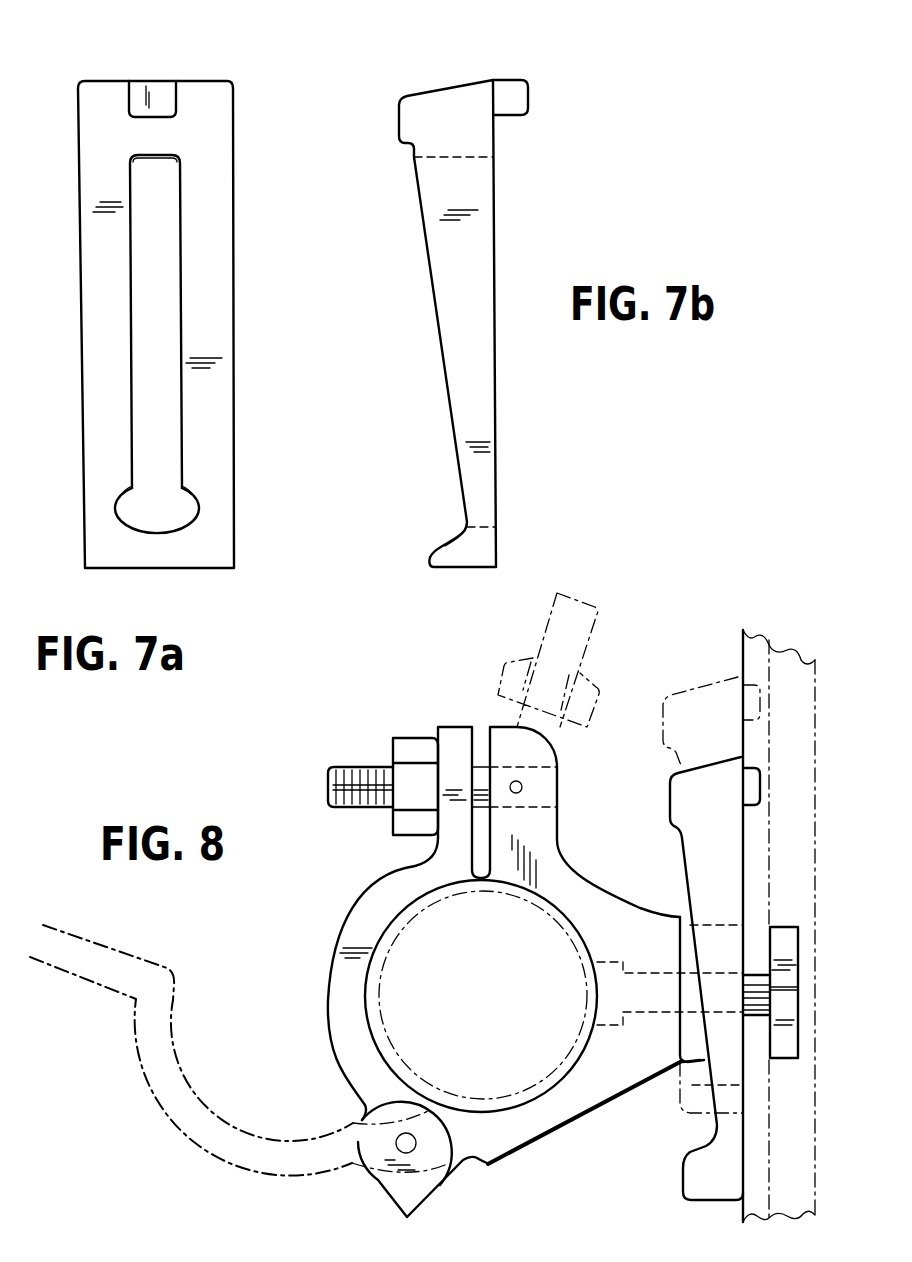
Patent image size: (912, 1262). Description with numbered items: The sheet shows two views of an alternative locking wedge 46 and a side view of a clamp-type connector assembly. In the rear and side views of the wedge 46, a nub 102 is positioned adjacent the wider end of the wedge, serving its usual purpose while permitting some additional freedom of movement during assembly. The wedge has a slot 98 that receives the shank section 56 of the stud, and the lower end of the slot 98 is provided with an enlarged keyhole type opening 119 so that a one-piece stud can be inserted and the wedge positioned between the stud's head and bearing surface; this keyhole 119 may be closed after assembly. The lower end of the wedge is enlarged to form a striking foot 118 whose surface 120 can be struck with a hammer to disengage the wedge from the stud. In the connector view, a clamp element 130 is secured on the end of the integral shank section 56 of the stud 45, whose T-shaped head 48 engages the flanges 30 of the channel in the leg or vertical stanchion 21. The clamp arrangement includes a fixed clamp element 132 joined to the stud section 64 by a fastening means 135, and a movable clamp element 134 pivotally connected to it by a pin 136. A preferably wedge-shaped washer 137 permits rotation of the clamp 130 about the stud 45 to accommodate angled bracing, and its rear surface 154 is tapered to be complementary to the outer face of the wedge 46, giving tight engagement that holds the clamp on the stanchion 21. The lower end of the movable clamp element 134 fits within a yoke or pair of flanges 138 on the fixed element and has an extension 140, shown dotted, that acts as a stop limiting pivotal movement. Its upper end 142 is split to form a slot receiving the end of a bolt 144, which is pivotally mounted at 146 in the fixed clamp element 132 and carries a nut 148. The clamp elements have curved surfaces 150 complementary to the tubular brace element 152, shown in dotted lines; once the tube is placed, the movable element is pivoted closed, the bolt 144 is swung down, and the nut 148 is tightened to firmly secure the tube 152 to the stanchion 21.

In FIG. 7a, the nub 102 is at (157, 92).
In FIG. 7b, the nub 102 is at (518, 112).
In FIG. 7a, the locking wedge 46 is at (212, 222).
In FIG. 7b, the locking wedge 46 is at (483, 272).
In FIG. 8, the locking wedge 46 is at (700, 783).
In FIG. 7a, the wedge slot 98 is at (165, 350).
In FIG. 7a, the keyhole type opening 119 is at (195, 496).
In FIG. 7b, the striking foot 118 is at (452, 562).
In FIG. 7b, the surface 120 is at (482, 572).
In FIG. 8, the flanges 30 is at (757, 624).
In FIG. 8, the leg 21 is at (782, 672).
In FIG. 8, the clamp element 130 is at (602, 1118).
In FIG. 8, the fixed clamp element 132 is at (628, 854).
In FIG. 8, the movable clamp element 134 is at (366, 905).
In FIG. 8, the fastening means 135 is at (617, 960).
In FIG. 8, the pin 136 is at (418, 1105).
In FIG. 8, the washer 137 is at (693, 1032).
In FIG. 8, the yoke or pair of flanges 138 is at (385, 1168).
In FIG. 8, the extension 140 is at (413, 1210).
In FIG. 8, the upper end 142 is at (478, 688).
In FIG. 8, the bolt 144 is at (352, 790).
In FIG. 8, the pivot 146 is at (522, 787).
In FIG. 8, the nut 148 is at (400, 760).
In FIG. 8, the curved surfaces 150 is at (367, 977).
In FIG. 8, the tubular brace element 152 is at (425, 1072).
In FIG. 8, the rear surface 154 is at (693, 943).
In FIG. 8, the T-shaped head 48 is at (793, 968).
In FIG. 8, the stud 45 is at (803, 1003).
In FIG. 8, the shank section 56 is at (762, 1015).
In FIG. 8, the stud section 64 is at (670, 1028).